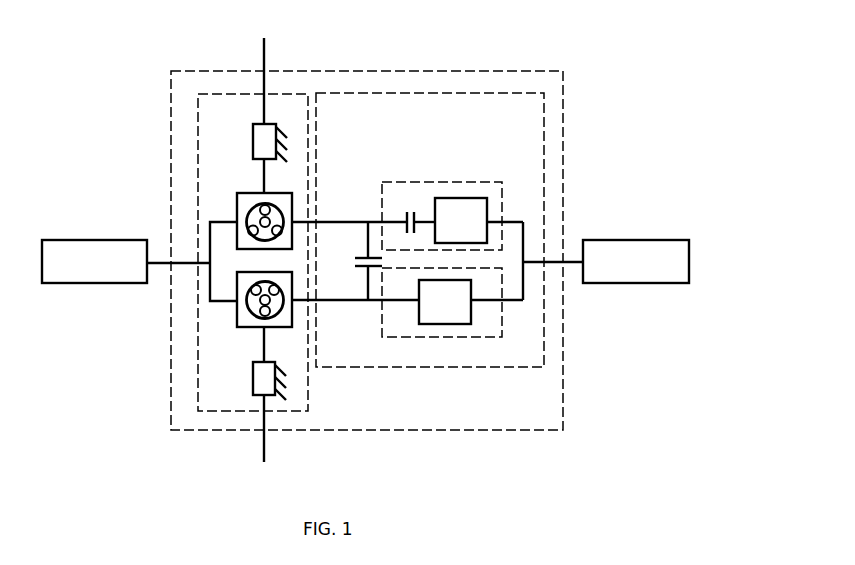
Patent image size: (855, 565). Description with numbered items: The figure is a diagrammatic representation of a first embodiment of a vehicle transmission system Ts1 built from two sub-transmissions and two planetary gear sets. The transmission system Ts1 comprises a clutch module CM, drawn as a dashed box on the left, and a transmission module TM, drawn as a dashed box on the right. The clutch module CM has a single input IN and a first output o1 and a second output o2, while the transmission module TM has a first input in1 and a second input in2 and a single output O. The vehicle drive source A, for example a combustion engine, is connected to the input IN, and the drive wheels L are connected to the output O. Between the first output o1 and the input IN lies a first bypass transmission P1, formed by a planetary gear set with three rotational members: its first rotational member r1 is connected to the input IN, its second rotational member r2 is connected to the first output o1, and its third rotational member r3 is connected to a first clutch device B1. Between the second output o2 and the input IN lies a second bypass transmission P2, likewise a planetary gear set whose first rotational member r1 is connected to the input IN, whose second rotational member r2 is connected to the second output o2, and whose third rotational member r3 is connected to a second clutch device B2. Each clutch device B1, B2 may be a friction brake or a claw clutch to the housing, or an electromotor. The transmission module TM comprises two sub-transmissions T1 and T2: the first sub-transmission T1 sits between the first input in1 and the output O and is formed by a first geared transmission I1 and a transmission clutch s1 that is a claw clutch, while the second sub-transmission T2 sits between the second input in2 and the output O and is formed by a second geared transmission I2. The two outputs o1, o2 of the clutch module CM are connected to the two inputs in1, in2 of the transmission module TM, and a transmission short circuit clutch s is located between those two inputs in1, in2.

The transmission system Ts1 is at (171, 71).
The clutch module CM is at (217, 94).
The transmission module TM is at (497, 93).
The first clutch device B1 is at (270, 105).
The second clutch device B2 is at (269, 406).
The first bypass transmission P1 is at (247, 200).
The second bypass transmission P2 is at (238, 326).
The first rotational member r1 is at (238, 226).
The second rotational member r2 is at (293, 226).
The third rotational member r3 is at (263, 190).
The drive source A is at (95, 263).
The input IN is at (197, 263).
The drive wheels L is at (638, 267).
The output O is at (543, 262).
The first output o1 is at (310, 220).
The second output o2 is at (306, 303).
The first input in1 is at (315, 220).
The second input in2 is at (315, 303).
The transmission short circuit clutch s is at (354, 263).
The transmission clutch s1 is at (411, 211).
The first geared transmission I1 is at (462, 213).
The second geared transmission I2 is at (445, 310).
The first sub-transmission T1 is at (495, 181).
The second sub-transmission T2 is at (492, 338).